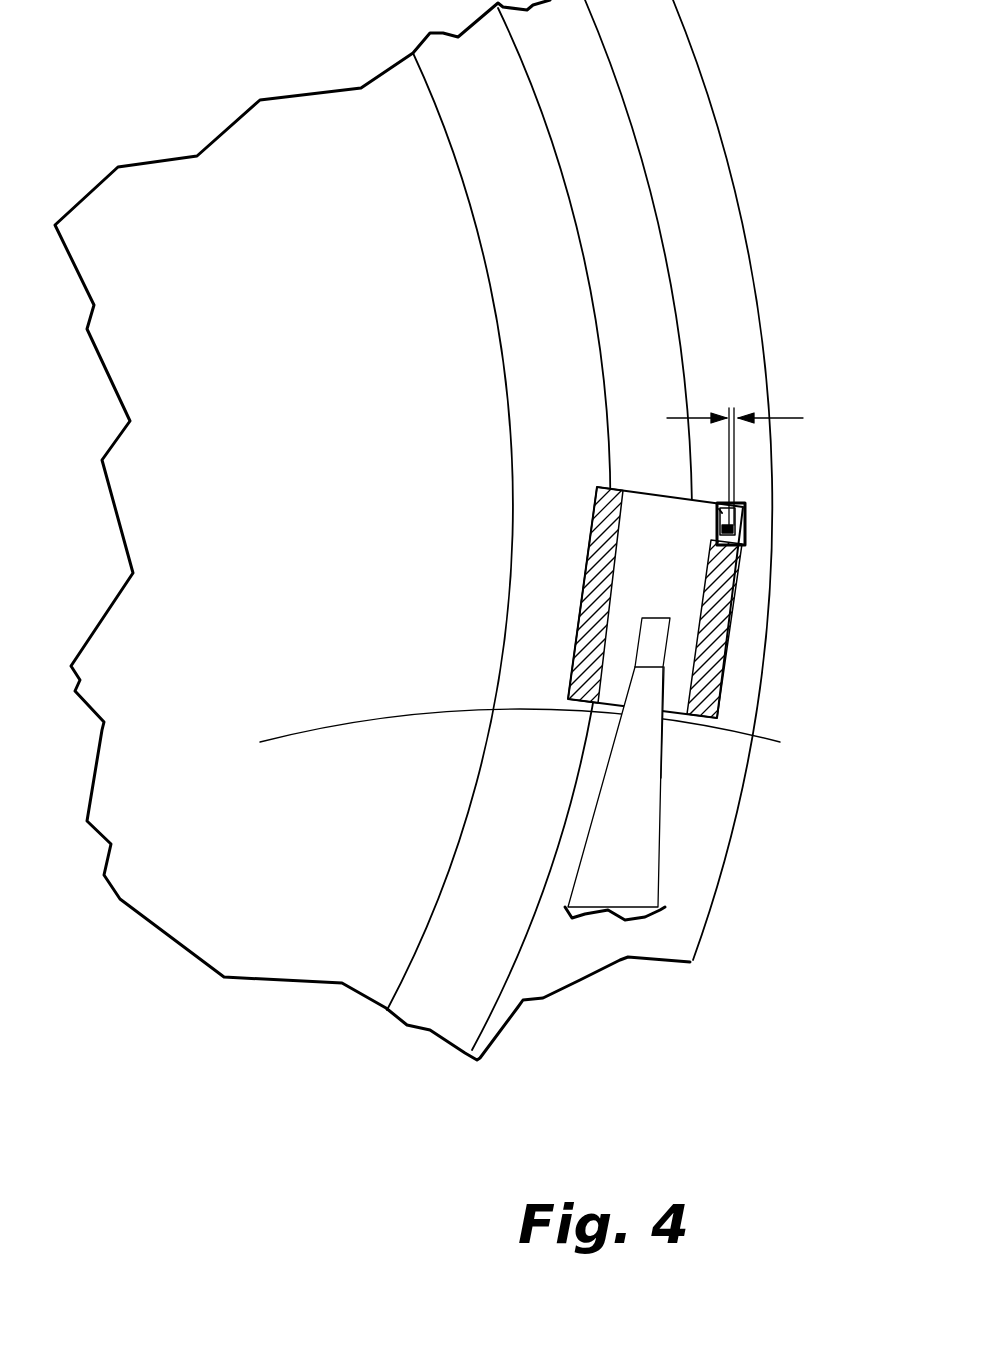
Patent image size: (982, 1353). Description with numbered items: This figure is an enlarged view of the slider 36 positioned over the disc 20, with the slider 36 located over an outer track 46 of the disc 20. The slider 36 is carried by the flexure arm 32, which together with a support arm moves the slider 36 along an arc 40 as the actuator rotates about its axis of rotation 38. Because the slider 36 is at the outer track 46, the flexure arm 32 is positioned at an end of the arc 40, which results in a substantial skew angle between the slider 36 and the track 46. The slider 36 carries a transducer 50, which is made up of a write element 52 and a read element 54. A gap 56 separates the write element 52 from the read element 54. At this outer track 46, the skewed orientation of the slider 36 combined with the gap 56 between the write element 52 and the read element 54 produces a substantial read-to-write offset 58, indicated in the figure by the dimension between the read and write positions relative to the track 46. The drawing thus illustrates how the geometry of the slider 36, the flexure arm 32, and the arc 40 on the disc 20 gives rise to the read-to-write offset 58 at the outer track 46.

The disc 20 is at (725, 143).
The outer track 46 is at (717, 260).
The axis of rotation 38 is at (556, 341).
The arc 40 is at (444, 711).
The slider 36 is at (619, 712).
The flexure arm 32 is at (686, 769).
The transducer 50 is at (735, 542).
The read element 54 is at (786, 522).
The write element 52 is at (681, 520).
The gap 56 is at (722, 513).
The read-to-write offset 58 is at (731, 408).